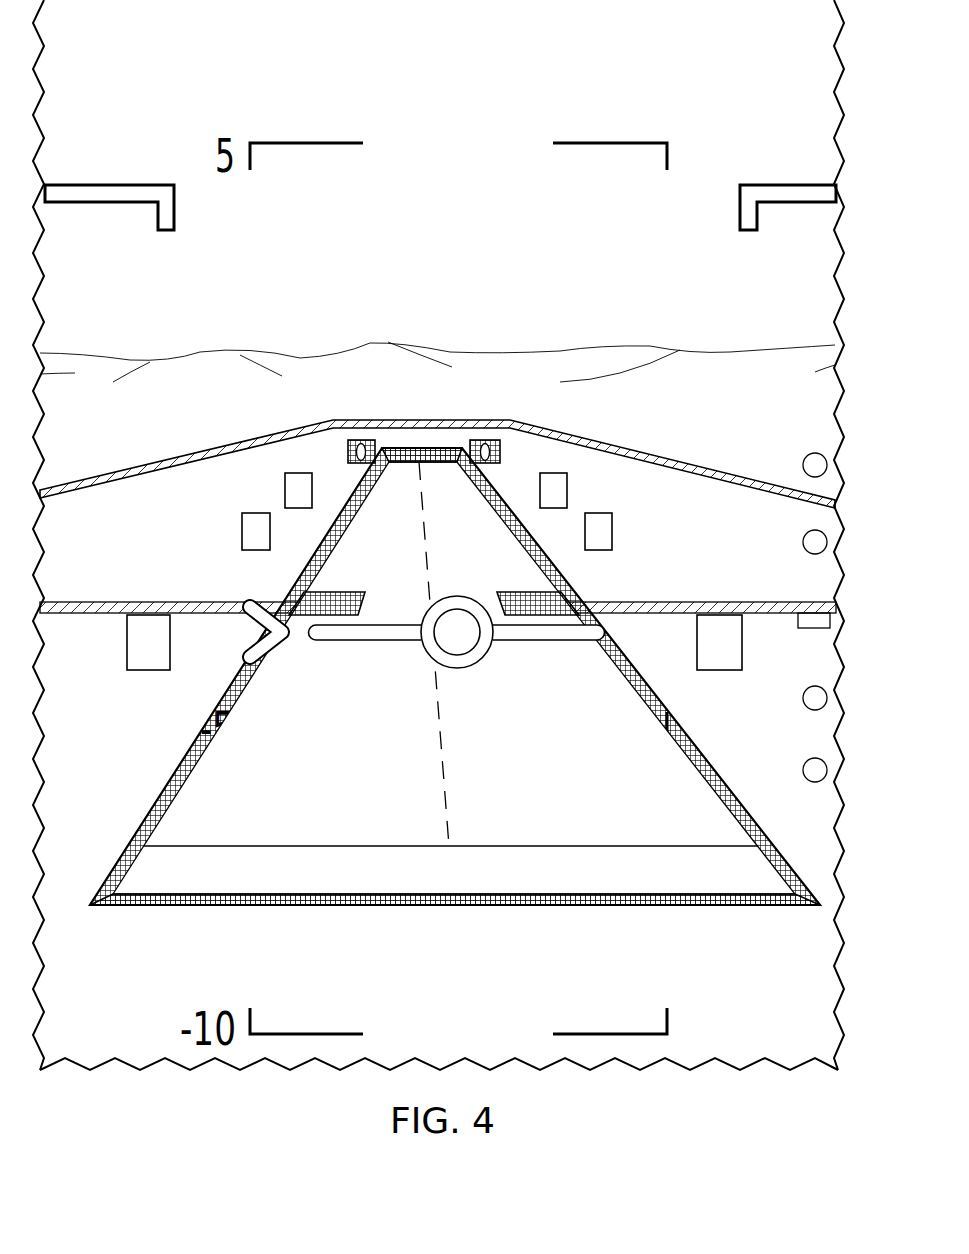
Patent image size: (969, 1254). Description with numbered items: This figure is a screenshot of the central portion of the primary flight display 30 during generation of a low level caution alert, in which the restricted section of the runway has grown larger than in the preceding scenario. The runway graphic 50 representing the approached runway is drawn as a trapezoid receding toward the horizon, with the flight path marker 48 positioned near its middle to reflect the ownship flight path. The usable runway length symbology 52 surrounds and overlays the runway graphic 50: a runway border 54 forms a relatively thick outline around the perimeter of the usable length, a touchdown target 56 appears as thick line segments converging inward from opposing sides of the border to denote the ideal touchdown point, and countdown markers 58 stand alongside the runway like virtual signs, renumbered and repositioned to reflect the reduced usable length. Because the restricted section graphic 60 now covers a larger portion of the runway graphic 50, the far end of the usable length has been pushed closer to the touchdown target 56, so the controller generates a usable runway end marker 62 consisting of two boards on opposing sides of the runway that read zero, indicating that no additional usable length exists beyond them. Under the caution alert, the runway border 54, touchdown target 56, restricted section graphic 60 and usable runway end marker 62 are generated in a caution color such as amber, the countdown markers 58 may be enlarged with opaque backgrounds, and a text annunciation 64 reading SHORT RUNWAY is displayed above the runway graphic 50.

The primary flight display 30 is at (85, 34).
The flight path marker 48 is at (526, 640).
The runway graphic 50 is at (531, 812).
The usable runway length symbology 52 is at (190, 478).
The runway border 54 is at (140, 904).
The touchdown target 56 is at (355, 592).
The countdown markers 58 is at (285, 490).
The restricted section graphic 60 is at (440, 447).
The usable runway end marker 62 is at (348, 452).
The text annunciation 64 is at (195, 50).